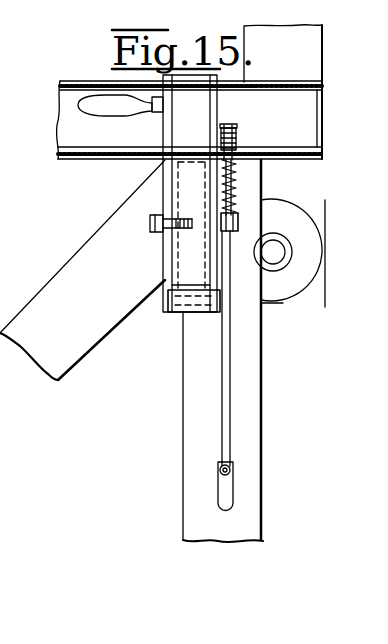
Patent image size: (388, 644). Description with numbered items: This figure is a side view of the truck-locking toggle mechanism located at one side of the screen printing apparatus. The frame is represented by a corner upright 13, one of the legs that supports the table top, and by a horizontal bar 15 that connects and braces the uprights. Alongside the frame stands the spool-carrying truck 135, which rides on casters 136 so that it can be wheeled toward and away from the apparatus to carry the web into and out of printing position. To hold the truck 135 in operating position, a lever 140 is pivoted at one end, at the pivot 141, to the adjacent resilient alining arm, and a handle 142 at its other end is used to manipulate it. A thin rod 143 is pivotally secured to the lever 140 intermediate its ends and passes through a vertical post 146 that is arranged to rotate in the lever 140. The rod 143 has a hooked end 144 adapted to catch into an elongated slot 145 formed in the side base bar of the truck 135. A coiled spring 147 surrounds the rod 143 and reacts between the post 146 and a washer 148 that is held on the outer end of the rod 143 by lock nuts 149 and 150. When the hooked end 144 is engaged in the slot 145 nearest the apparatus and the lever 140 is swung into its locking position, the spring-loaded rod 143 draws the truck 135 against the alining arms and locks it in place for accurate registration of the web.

The corner upright 13 is at (306, 107).
The horizontal bar 15 is at (309, 47).
The truck 135 is at (260, 397).
The caster 136 is at (289, 294).
The lever 140 is at (165, 163).
The pivot 141 is at (178, 312).
The handle 142 is at (126, 108).
The thin rod 143 is at (227, 372).
The hooked end 144 is at (222, 468).
The elongated slot 145 is at (218, 488).
The vertical post 146 is at (240, 215).
The coiled spring 147 is at (234, 180).
The bolt 148 is at (234, 143).
The lock nut 149 is at (233, 138).
The lock nut 150 is at (232, 131).